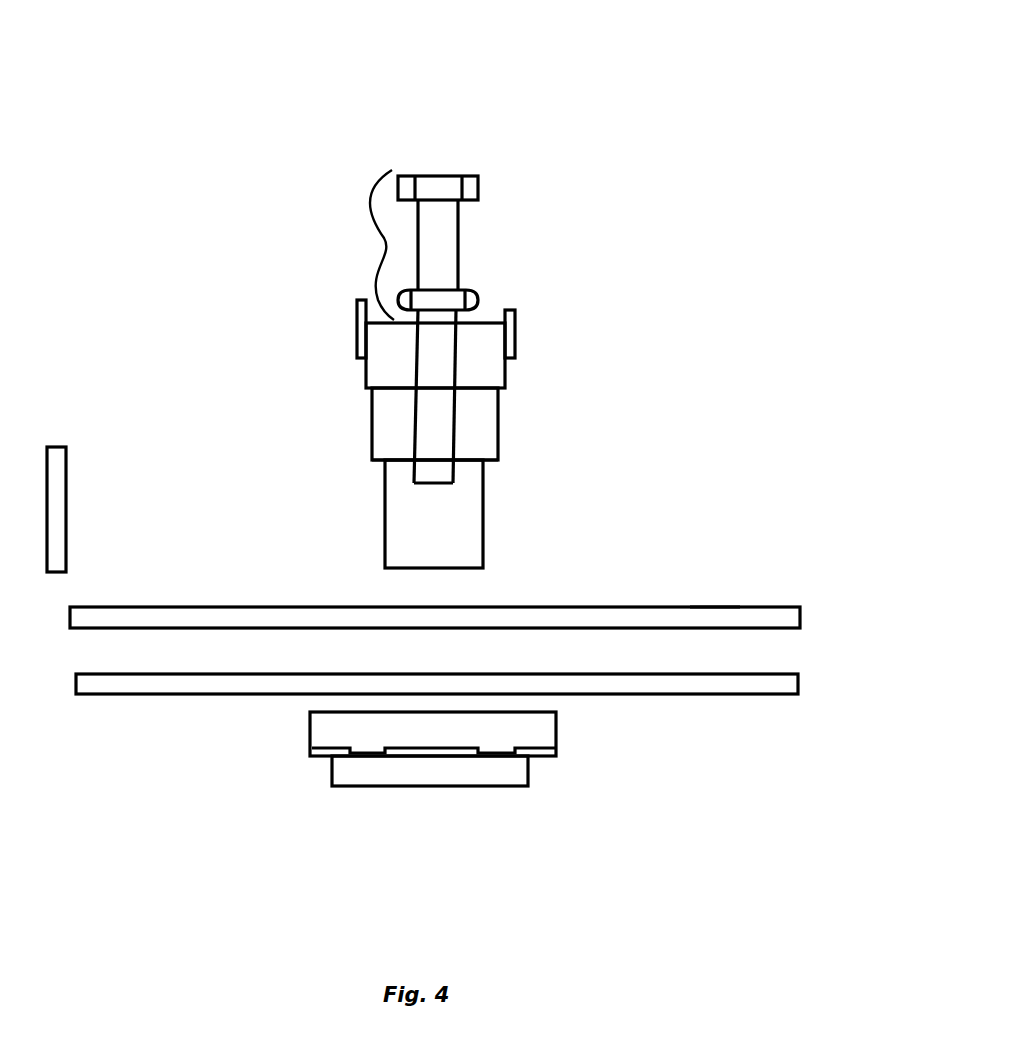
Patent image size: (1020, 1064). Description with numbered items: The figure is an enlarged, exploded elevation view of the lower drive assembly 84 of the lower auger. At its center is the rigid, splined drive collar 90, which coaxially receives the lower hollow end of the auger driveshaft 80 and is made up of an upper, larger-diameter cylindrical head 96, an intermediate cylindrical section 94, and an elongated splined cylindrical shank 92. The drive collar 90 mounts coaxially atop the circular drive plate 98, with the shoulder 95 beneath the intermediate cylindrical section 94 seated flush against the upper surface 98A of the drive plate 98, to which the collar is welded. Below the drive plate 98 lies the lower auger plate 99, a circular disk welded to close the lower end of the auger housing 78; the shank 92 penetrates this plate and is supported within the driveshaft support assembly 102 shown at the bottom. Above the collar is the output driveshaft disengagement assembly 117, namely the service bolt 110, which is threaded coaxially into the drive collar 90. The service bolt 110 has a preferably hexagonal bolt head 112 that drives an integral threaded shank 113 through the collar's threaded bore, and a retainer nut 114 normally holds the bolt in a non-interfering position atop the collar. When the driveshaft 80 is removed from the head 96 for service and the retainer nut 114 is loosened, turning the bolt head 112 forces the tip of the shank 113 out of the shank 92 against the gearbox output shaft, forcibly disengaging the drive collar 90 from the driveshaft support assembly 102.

The auger housing 78 is at (58, 505).
The auger driveshaft 80 is at (360, 320).
The lower drive assembly 84 is at (333, 232).
The drive collar 90 is at (513, 470).
The splined cylindrical shank 92 is at (393, 511).
The intermediate cylindrical section 94 is at (383, 430).
The shoulder 95 is at (381, 464).
The cylindrical head 96 is at (372, 370).
The drive plate 98 is at (762, 617).
The upper surface 98A is at (710, 603).
The lower auger plate 99 is at (780, 690).
The driveshaft support assembly 102 is at (572, 762).
The service bolt 110 is at (462, 158).
The bolt head 112 is at (480, 190).
The threaded shank 113 is at (458, 252).
The retainer nut 114 is at (478, 298).
The output driveshaft disengagement assembly 117 is at (364, 246).